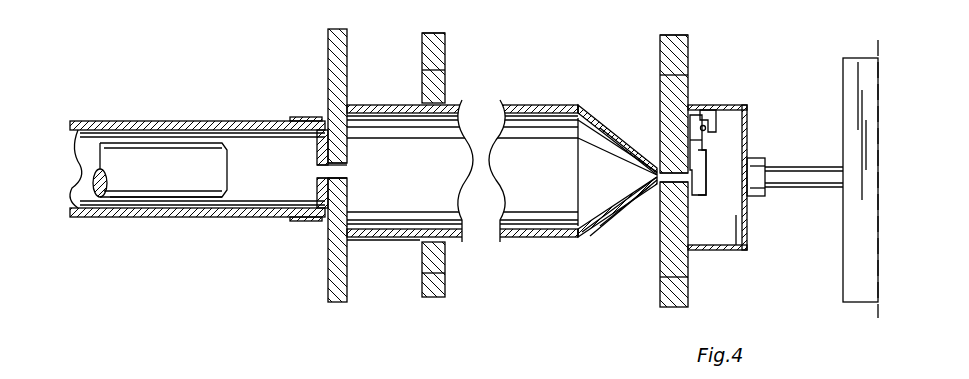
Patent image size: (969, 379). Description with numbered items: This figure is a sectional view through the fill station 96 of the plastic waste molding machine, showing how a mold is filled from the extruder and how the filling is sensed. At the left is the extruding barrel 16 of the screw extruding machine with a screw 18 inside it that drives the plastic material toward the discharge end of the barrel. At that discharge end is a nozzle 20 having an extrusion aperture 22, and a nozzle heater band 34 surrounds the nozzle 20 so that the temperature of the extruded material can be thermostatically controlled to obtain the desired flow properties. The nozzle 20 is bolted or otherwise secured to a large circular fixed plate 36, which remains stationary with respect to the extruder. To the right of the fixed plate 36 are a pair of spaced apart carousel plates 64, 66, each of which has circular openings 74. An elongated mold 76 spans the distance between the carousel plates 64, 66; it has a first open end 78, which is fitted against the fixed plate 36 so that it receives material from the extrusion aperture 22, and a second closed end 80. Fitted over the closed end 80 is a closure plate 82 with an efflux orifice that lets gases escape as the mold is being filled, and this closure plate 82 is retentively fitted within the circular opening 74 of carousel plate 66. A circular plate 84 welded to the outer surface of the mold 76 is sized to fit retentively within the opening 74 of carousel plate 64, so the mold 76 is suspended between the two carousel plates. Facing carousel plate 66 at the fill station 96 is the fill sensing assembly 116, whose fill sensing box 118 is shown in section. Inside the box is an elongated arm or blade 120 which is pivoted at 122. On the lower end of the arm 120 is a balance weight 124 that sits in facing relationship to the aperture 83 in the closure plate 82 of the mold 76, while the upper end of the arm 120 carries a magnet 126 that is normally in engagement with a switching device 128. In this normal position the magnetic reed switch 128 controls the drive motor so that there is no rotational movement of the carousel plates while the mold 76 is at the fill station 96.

The extruding barrel 16 is at (76, 120).
The screw 18 is at (112, 140).
The nozzle 20 is at (348, 76).
The extrusion aperture 22 is at (360, 175).
The nozzle heater band 34 is at (318, 222).
The fixed plate 36 is at (345, 295).
The carousel plate 64 is at (438, 38).
The carousel plate 66 is at (684, 36).
The circular openings 74 is at (446, 75).
The elongated mold 76 is at (512, 102).
The first open end 78 is at (357, 222).
The second closed end 80 is at (635, 195).
The closure plate 82 is at (660, 96).
The aperture 83 is at (645, 175).
The circular plate 84 is at (445, 268).
The fill station 96 is at (620, 46).
The fill sensing assembly 116 is at (855, 58).
The fill sensing box 118 is at (730, 250).
The arm or blade 120 is at (698, 148).
The pivot 122 is at (708, 126).
The balance weight 124 is at (700, 188).
The magnet 126 is at (710, 110).
The switching device 128 is at (742, 102).